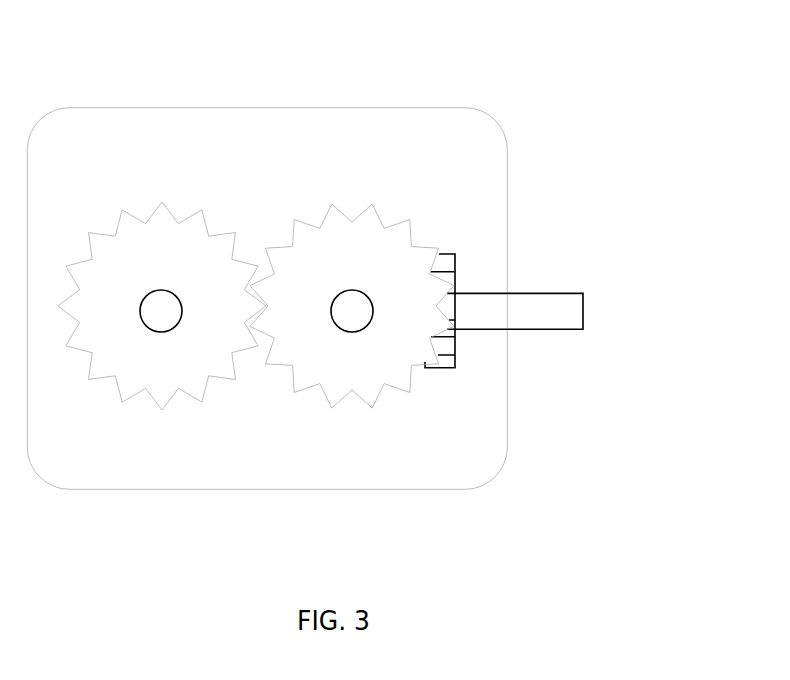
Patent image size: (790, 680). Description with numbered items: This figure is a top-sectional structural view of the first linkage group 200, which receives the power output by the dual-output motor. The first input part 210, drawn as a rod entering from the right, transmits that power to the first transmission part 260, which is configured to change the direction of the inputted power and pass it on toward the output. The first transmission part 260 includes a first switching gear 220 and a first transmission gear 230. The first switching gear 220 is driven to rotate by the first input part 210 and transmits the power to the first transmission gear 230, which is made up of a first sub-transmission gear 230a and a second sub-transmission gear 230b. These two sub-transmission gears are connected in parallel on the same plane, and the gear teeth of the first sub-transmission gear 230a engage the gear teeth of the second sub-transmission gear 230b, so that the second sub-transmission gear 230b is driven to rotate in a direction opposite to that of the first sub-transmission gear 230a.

The first linkage group 200 is at (278, 80).
The first input part 210 is at (535, 300).
The first switching gear 220 is at (442, 253).
The first transmission gear 230 is at (360, 312).
The first sub-transmission gear 230a is at (368, 232).
The second sub-transmission gear 230b is at (133, 240).
The first transmission part 260 is at (360, 312).